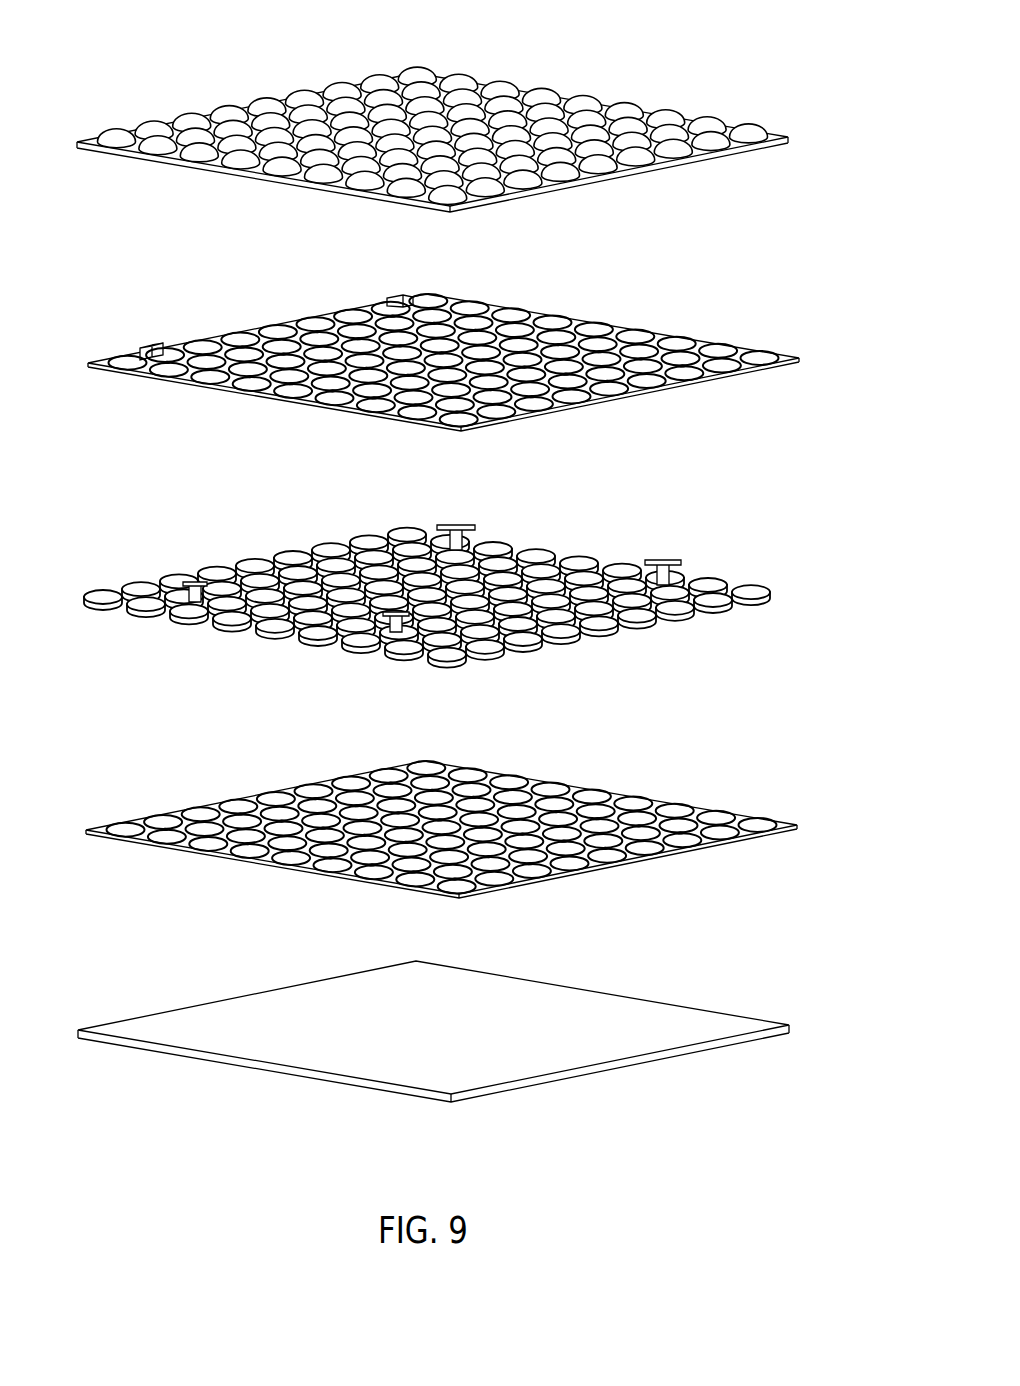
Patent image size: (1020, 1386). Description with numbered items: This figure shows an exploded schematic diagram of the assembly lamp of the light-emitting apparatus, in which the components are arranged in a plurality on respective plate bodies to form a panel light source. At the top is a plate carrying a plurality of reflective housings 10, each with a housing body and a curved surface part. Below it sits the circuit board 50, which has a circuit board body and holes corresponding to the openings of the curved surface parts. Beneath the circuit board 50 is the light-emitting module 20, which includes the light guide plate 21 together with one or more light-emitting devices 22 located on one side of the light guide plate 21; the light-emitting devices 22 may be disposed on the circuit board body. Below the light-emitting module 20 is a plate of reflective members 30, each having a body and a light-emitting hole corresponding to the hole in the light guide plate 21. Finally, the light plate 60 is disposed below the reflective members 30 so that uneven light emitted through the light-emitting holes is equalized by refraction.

The reflective housing 10 is at (602, 93).
The light-emitting module 20 is at (459, 466).
The light guide plate 21 is at (600, 551).
The light-emitting device 22 is at (650, 389).
The reflective member 30 is at (614, 784).
The circuit board 50 is at (443, 359).
The light plate 60 is at (685, 977).